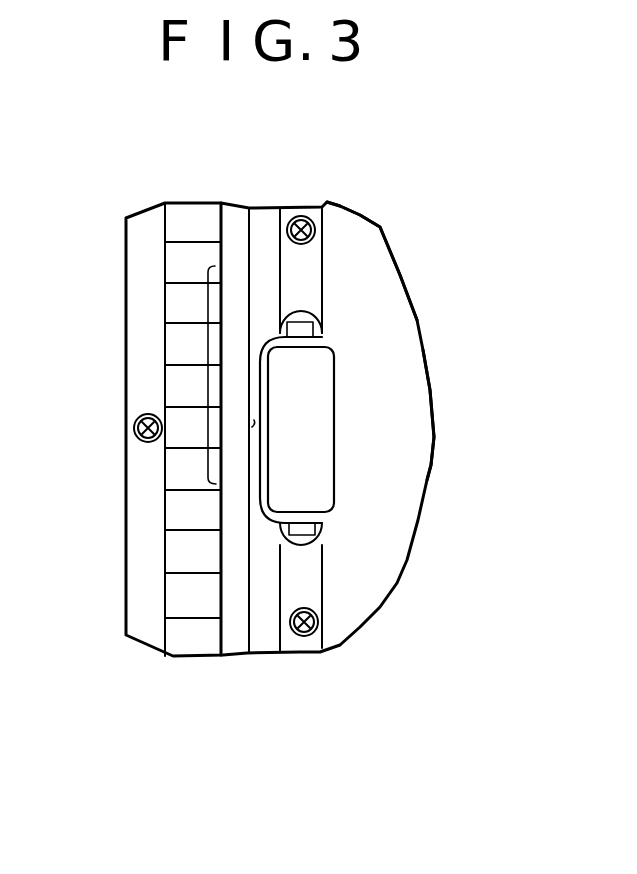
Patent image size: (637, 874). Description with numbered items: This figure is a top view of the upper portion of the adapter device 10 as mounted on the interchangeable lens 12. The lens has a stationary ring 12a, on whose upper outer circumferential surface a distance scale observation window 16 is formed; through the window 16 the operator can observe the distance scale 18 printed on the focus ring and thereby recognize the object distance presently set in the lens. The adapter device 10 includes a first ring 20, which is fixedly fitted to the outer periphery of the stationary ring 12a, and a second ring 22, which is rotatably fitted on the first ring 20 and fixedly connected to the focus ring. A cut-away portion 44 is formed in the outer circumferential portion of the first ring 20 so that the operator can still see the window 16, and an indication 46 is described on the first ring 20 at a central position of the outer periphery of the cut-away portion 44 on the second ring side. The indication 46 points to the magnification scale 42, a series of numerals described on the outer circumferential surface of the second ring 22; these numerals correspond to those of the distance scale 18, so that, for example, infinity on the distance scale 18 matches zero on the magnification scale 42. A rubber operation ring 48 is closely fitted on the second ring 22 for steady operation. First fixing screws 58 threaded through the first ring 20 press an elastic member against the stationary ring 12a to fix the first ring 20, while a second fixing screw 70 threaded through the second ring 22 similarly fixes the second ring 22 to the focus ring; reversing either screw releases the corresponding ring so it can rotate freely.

The adapter device 10 is at (332, 668).
The interchangeable lens 12 is at (406, 564).
The stationary ring 12a is at (363, 242).
The distance scale observation window 16 is at (336, 461).
The distance scale 18 is at (312, 505).
The first ring 20 is at (267, 240).
The second ring 22 is at (235, 220).
The magnification scale 42 is at (208, 376).
The cut-away portion 44 is at (320, 339).
The indication 46 is at (252, 427).
The operation ring 48 is at (190, 242).
The first fixing screw 58 is at (299, 215).
The second fixing screw 70 is at (130, 430).